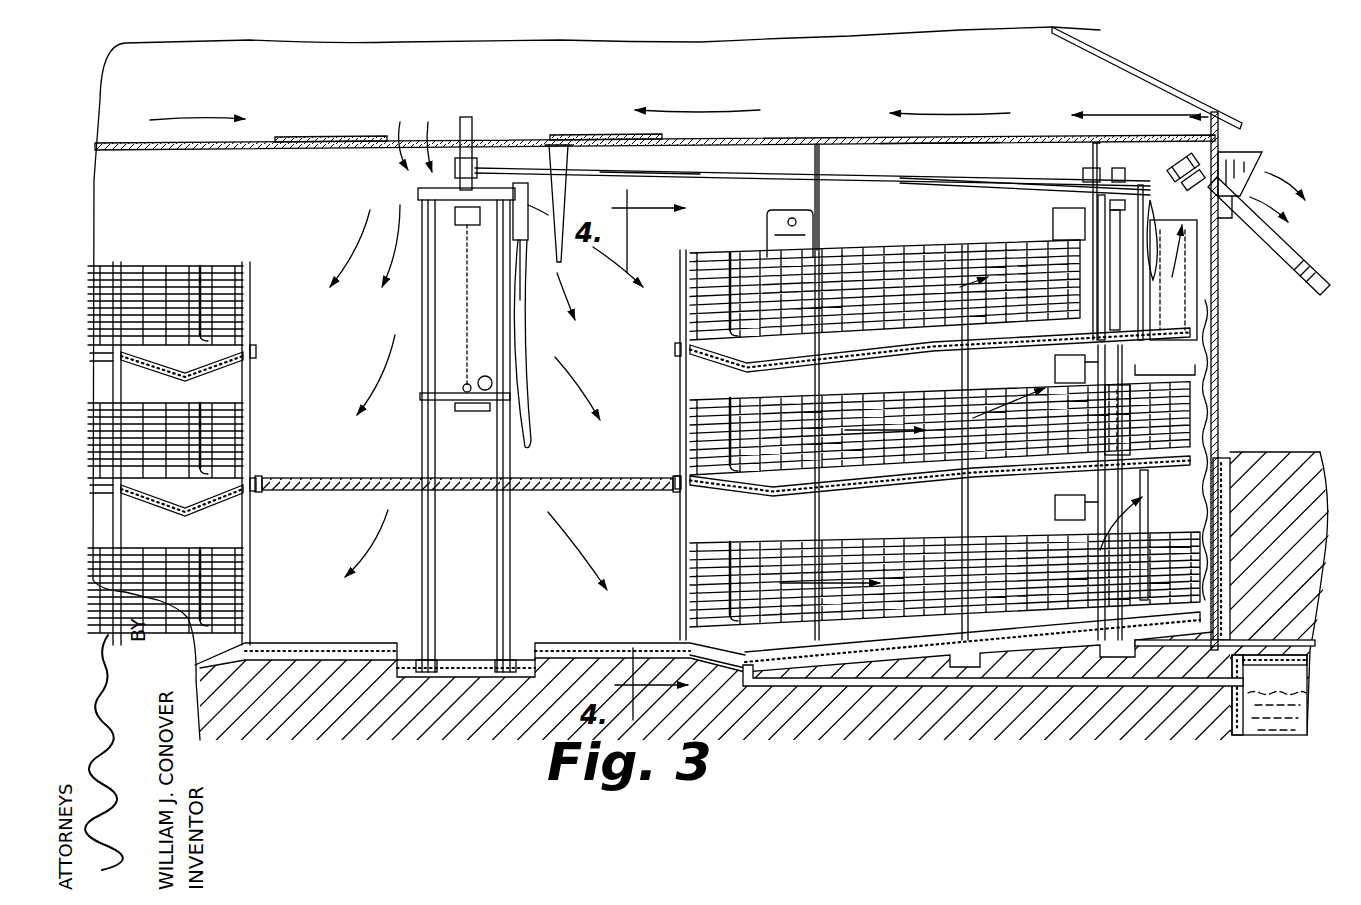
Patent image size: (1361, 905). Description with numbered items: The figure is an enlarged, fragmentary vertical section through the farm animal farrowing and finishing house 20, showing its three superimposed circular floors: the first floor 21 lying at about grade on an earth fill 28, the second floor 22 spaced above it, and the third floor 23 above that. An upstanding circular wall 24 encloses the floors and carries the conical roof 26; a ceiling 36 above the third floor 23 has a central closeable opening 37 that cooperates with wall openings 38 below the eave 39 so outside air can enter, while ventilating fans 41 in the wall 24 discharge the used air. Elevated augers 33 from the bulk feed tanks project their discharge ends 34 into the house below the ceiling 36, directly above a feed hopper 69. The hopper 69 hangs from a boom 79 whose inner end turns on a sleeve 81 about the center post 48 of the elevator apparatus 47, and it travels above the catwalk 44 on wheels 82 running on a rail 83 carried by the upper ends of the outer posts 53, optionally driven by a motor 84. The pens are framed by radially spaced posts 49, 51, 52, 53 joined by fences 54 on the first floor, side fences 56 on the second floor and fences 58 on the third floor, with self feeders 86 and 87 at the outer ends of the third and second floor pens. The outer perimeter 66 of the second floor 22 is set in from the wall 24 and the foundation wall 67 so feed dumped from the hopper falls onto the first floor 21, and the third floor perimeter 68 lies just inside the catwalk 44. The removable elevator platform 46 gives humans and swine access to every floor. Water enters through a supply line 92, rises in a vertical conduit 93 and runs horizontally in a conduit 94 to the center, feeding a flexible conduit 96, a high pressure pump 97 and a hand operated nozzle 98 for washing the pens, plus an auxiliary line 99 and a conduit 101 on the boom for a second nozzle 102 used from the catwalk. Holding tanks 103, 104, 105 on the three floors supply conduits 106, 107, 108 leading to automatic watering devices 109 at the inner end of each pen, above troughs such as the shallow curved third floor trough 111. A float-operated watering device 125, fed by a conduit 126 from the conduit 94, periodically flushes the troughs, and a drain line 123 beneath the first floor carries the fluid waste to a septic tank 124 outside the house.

The farm animal farrowing and finishing house 20 is at (1255, 68).
The first floor 21 is at (875, 632).
The second floor 22 is at (95, 490).
The third floor 23 is at (95, 361).
The circular wall 24 is at (1222, 410).
The conical roof 26 is at (1155, 77).
The earth fill 28 is at (1300, 455).
The augers 33 is at (1297, 242).
The discharge ends 34 is at (1178, 135).
The ceiling 36 is at (1050, 136).
The closeable opening 37 is at (485, 165).
The wall openings 38 is at (1228, 112).
The eave 39 is at (1232, 120).
The ventilating fans 41 is at (1262, 153).
The catwalk 44 is at (1195, 367).
The elevator floor 46 is at (580, 491).
The elevator apparatus 47 is at (413, 430).
The center post 48 is at (468, 117).
The posts 49 is at (252, 378).
The posts 51 is at (113, 530).
The posts 52 is at (960, 512).
The outer posts 53 is at (1125, 487).
The fence 54 is at (160, 548).
The side fences 56 is at (180, 403).
The fences 58 is at (160, 265).
The outer perimeter of the second floor 66 is at (1214, 455).
The foundation wall 67 is at (1240, 452).
The perimeter of the third floor 68 is at (1125, 325).
The feed hopper 69 is at (1183, 295).
The boom 79 is at (963, 179).
The sleeve 81 is at (455, 160).
The wheels 82 is at (1118, 166).
The rail 83 is at (1143, 245).
The motor 84 is at (1083, 172).
The self feeder 86 is at (1105, 292).
The self feeder 87 is at (1130, 400).
The supply line 92 is at (1312, 628).
The vertical conduit 93 is at (1090, 645).
The horizontal conduit 94 is at (905, 144).
The flexible conduit 96 is at (535, 241).
The high pressure pump 97 is at (561, 150).
The hand operated nozzle 98 is at (525, 380).
The auxiliary line 99 is at (563, 262).
The conduit 101 is at (640, 176).
The hand operated nozzle 102 is at (1157, 212).
The holding tank 103 is at (1052, 222).
The holding tank 104 is at (1054, 368).
The holding tank 105 is at (1054, 507).
The conduit 106 is at (215, 300).
The conduit 107 is at (210, 420).
The conduit 108 is at (205, 575).
The automatic watering device 109 is at (205, 336).
The third floor trough 111 is at (252, 356).
The drain line 123 is at (975, 684).
The septic tank 124 is at (1295, 680).
The float-operated watering device 125 is at (760, 208).
The conduit 126 is at (815, 152).